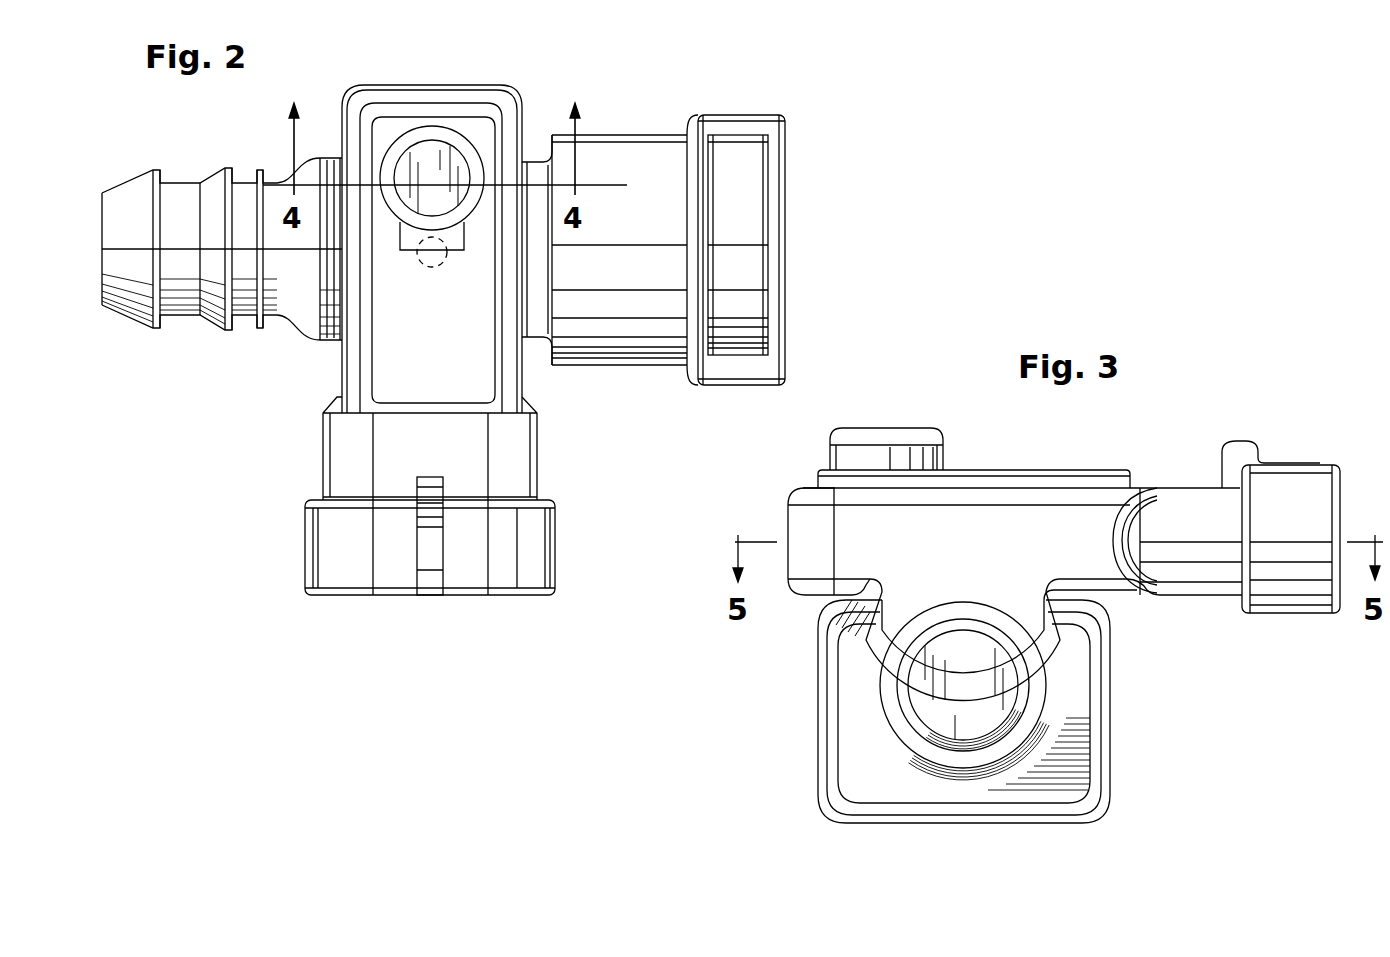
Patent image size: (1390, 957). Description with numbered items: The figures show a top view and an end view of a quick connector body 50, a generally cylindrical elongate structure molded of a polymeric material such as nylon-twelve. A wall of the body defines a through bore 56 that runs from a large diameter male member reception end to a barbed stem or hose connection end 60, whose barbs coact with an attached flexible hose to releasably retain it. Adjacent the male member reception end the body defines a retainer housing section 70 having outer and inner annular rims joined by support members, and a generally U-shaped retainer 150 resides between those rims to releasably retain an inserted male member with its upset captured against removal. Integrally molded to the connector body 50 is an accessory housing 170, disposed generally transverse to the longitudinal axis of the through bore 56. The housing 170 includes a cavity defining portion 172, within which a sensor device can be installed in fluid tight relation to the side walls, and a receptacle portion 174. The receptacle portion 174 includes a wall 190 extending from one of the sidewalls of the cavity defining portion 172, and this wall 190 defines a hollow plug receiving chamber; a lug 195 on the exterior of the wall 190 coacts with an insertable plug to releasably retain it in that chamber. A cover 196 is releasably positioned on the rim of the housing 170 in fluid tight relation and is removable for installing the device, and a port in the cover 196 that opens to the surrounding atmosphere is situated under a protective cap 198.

In FIG. 2, the connector body 50 is at (588, 134).
In FIG. 3, the connector body 50 is at (823, 626).
In FIG. 3, the through bore 56 is at (981, 697).
In FIG. 2, the hose connection end 60 is at (250, 180).
In FIG. 2, the retainer housing section 70 is at (758, 113).
In FIG. 2, the retainer 150 is at (742, 175).
In FIG. 2, the accessory housing 170 is at (318, 440).
In FIG. 2, the cavity defining portion 172 is at (348, 92).
In FIG. 3, the cavity defining portion 172 is at (787, 524).
In FIG. 2, the receptacle portion 174 is at (305, 530).
In FIG. 3, the receptacle portion 174 is at (1179, 484).
In FIG. 3, the wall 190 is at (1193, 484).
In FIG. 3, the lug 195 is at (1243, 440).
In FIG. 2, the cover 196 is at (470, 115).
In FIG. 3, the cover 196 is at (958, 469).
In FIG. 3, the protective cap 198 is at (962, 421).